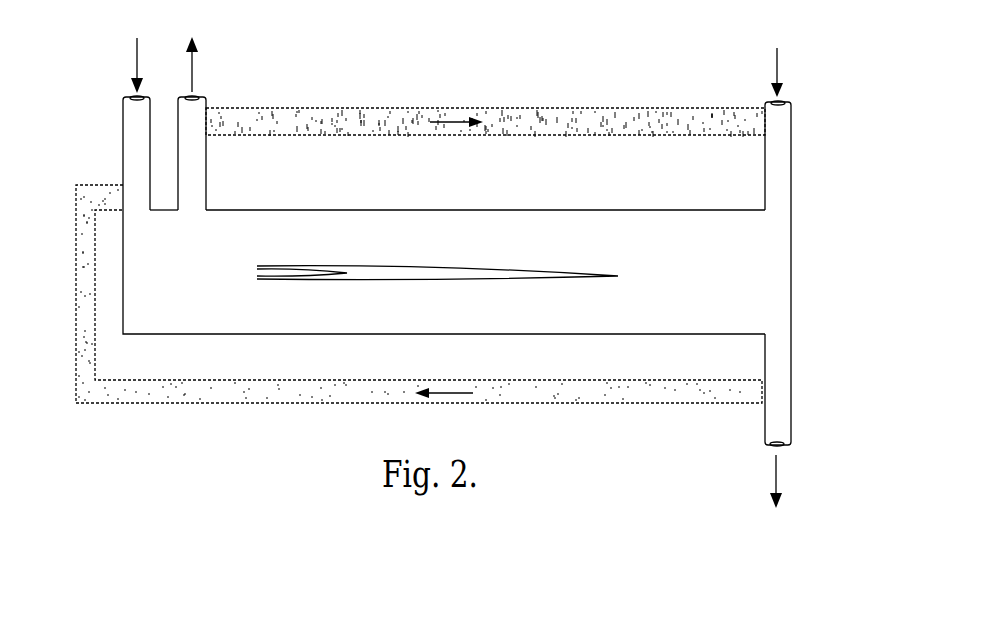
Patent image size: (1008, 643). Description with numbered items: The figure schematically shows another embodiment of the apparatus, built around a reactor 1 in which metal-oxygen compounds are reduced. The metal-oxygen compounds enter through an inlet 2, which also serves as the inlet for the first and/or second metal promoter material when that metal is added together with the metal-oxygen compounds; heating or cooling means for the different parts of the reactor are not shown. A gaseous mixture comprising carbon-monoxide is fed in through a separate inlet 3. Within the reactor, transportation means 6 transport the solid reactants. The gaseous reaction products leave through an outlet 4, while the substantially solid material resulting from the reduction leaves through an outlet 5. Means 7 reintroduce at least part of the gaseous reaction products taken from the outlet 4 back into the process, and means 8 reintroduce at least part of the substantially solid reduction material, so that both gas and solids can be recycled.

The reactor 1 is at (792, 262).
The inlet 2 is at (138, 148).
The inlet 3 is at (780, 163).
The outlet 4 is at (193, 142).
The outlet 5 is at (776, 393).
The transportation means 6 is at (392, 272).
The means to reintroduce gaseous reaction products 7 is at (470, 128).
The means to reintroduce solid material 8 is at (260, 383).